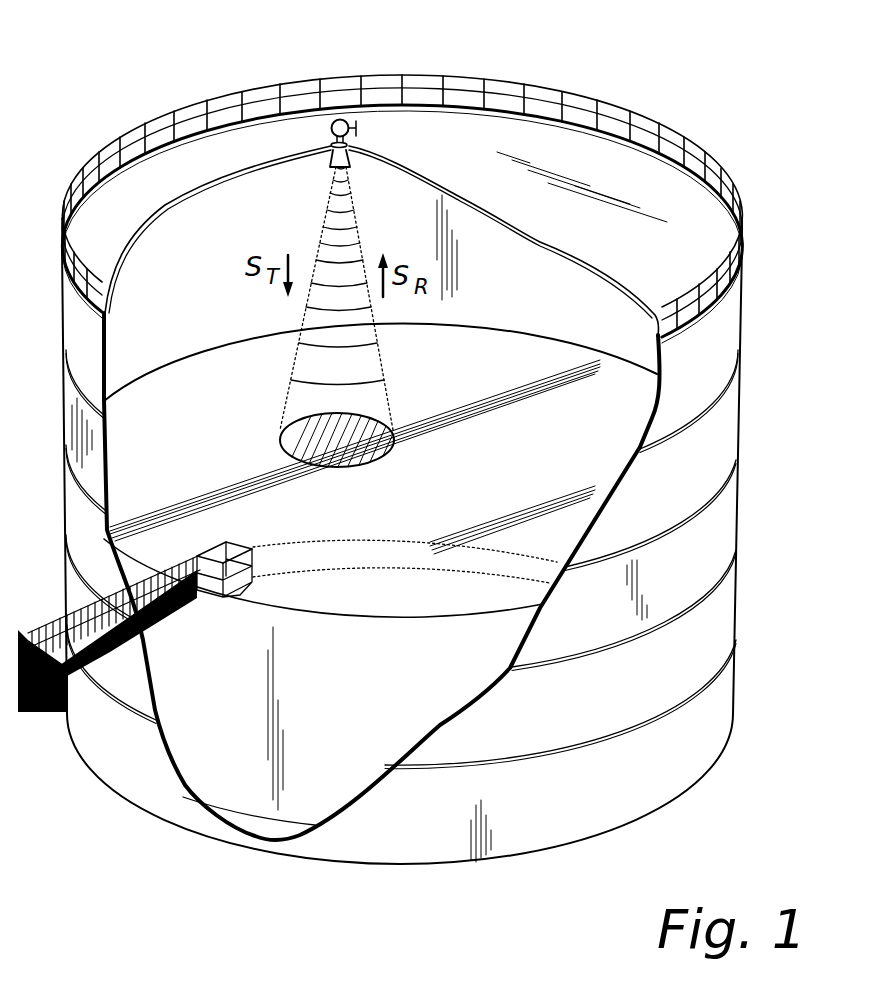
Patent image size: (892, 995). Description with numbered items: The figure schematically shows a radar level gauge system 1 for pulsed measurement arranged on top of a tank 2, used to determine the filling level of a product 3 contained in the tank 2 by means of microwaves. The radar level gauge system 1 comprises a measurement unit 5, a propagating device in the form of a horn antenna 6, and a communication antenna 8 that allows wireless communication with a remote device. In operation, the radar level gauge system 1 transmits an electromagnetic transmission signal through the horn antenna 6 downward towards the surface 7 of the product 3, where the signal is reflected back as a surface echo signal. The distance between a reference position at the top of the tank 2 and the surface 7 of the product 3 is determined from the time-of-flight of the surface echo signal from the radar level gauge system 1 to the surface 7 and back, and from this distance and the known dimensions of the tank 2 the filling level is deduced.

The level gauge system 1 is at (372, 100).
The tank 2 is at (717, 424).
The product 3 is at (323, 727).
The measurement unit 5 is at (312, 103).
The horn antenna 6 is at (330, 164).
The surface 7 is at (480, 618).
The communication antenna 8 is at (357, 128).